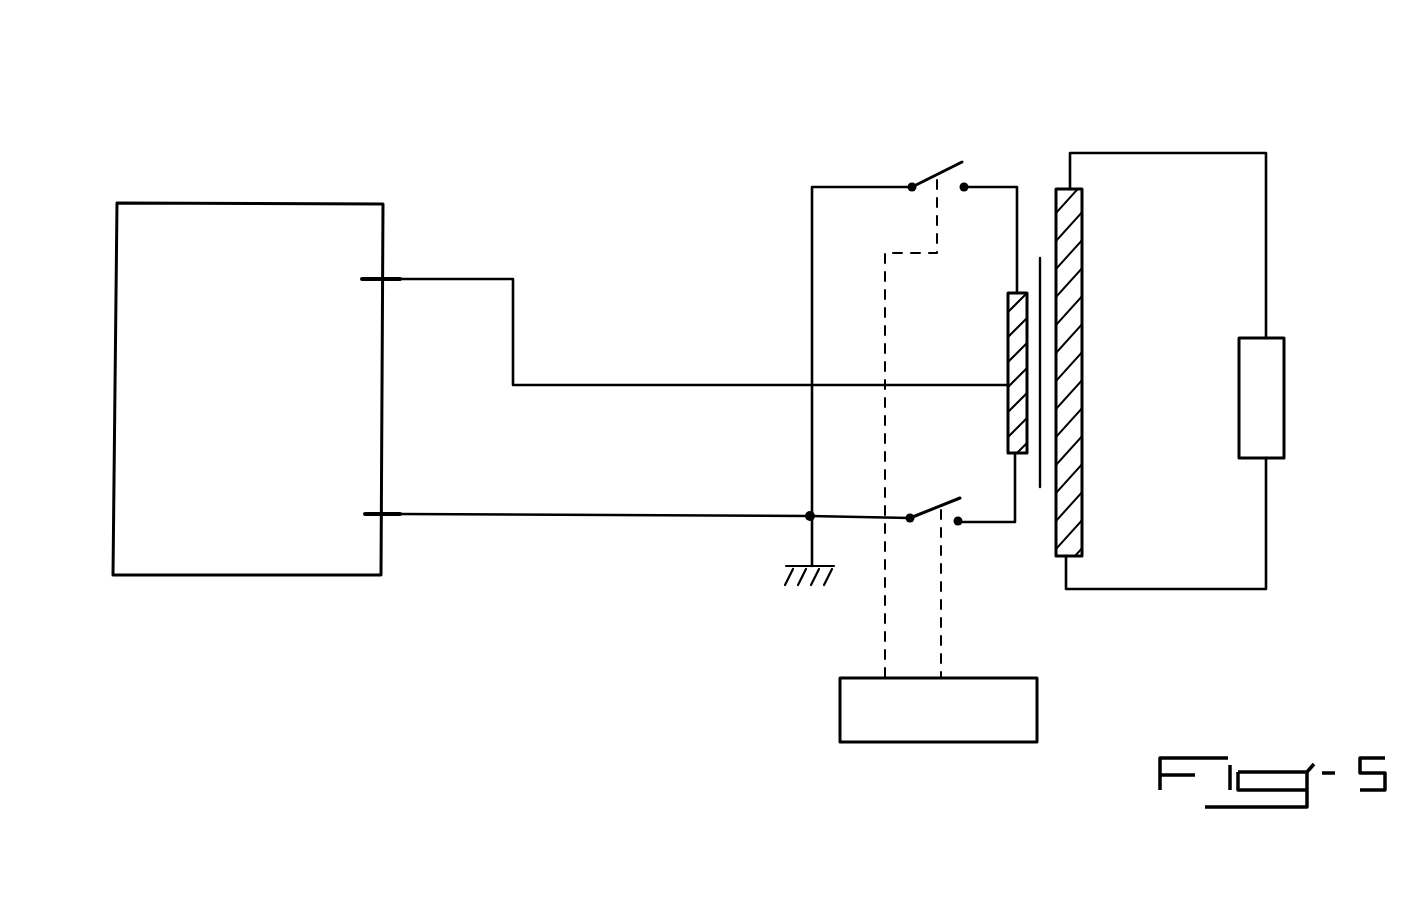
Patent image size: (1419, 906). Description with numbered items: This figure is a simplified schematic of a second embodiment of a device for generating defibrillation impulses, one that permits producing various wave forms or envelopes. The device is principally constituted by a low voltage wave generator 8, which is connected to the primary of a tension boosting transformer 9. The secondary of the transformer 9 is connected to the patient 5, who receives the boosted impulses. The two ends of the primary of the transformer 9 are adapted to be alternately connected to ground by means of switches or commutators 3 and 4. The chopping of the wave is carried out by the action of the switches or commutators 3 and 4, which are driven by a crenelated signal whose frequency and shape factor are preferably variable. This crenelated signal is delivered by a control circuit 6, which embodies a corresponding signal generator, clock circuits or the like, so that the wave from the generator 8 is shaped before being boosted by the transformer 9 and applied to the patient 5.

The switch or commutator 3 is at (945, 165).
The switch or commutator 4 is at (935, 505).
The patient 5 is at (1268, 404).
The control circuit 6 is at (920, 745).
The low voltage wave generator 8 is at (219, 228).
The tension boosting transformer 9 is at (1043, 178).